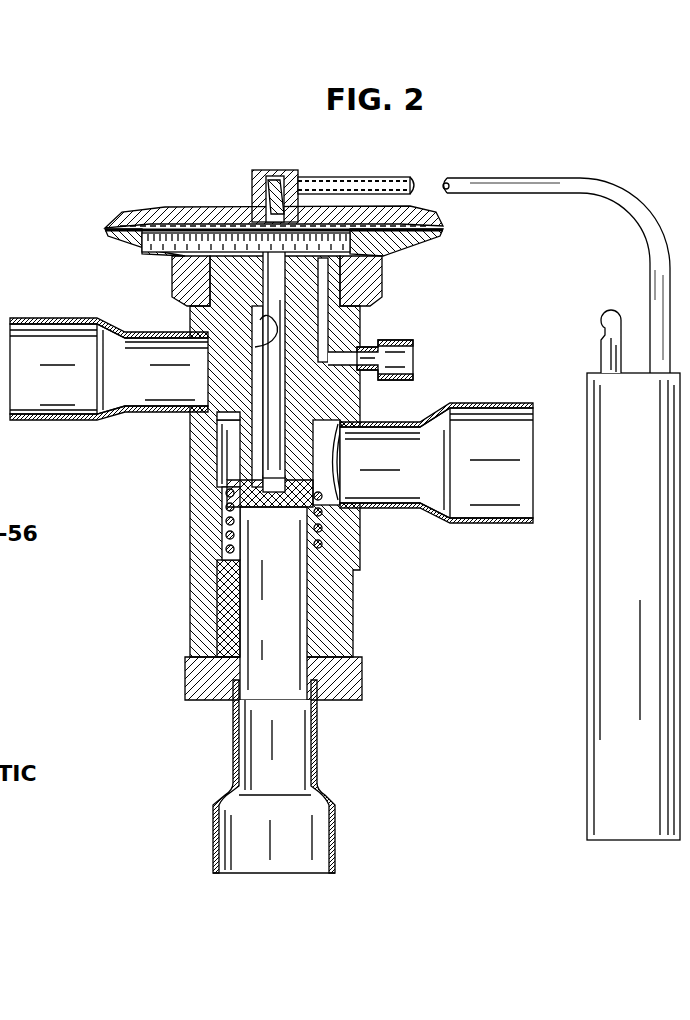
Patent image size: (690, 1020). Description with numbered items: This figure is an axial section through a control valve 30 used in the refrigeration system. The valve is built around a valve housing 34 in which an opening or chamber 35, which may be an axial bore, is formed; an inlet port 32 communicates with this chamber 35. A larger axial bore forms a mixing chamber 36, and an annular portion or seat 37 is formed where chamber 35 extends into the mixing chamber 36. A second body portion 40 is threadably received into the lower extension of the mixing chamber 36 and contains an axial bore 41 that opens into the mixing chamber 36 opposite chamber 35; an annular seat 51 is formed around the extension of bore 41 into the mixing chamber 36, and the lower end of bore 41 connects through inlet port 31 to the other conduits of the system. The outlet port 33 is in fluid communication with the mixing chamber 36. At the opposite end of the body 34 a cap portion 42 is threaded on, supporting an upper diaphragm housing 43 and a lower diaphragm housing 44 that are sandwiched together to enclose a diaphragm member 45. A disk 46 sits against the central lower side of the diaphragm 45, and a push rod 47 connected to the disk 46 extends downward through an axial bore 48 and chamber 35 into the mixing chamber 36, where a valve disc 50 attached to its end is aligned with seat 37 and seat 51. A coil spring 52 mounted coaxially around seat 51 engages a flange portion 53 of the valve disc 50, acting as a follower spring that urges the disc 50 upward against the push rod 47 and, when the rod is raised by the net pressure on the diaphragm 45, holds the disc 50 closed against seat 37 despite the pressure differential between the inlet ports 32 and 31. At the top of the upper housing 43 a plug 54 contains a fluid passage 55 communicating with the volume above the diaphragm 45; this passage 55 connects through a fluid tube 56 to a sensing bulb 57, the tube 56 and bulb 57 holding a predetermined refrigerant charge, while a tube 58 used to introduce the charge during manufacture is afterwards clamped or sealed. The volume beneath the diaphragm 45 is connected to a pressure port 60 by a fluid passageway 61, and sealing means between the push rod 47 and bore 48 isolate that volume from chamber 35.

The control valve 30 is at (159, 186).
The inlet port 31 is at (212, 846).
The inlet port 32 is at (62, 426).
The outlet port 33 is at (515, 524).
The valve housing 34 is at (186, 514).
The chamber 35 is at (214, 420).
The mixing chamber 36 is at (225, 456).
The seat 37 is at (232, 481).
The second body portion 40 is at (181, 693).
The axial bore 41 is at (282, 637).
The cap portion 42 is at (168, 282).
The upper diaphragm housing 43 is at (150, 208).
The lower diaphragm housing 44 is at (145, 249).
The diaphragm member 45 is at (181, 227).
The disk 46 is at (350, 248).
The push rod 47 is at (282, 366).
The axial bore 48 is at (246, 340).
The valve disc 50 is at (277, 500).
The annular seat 51 is at (323, 511).
The coil spring 52 is at (226, 533).
The flange portion 53 is at (332, 492).
The plug 54 is at (275, 170).
The fluid passage 55 is at (268, 197).
The fluid tube 56 is at (445, 180).
The sensing bulb 57 is at (596, 665).
The tube 58 is at (603, 322).
The pressure port 60 is at (413, 362).
The fluid passageway 61 is at (332, 324).